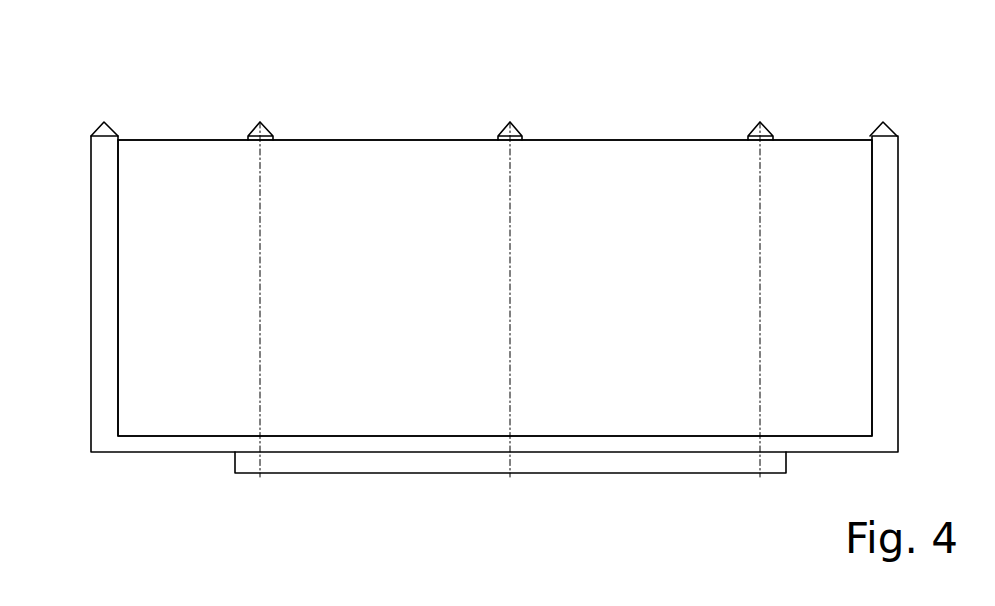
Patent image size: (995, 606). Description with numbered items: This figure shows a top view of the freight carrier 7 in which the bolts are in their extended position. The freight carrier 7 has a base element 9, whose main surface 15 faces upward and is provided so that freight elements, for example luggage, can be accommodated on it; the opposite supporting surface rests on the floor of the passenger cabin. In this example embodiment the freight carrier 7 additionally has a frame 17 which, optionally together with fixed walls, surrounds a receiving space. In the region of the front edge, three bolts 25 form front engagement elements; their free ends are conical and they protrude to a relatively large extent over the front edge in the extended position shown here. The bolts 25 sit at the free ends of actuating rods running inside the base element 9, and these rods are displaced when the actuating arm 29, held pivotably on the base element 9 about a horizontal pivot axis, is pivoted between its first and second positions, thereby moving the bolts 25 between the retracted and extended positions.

The freight carrier 7 is at (760, 493).
The base element 9 is at (666, 277).
The main surface 15 is at (495, 288).
The frame 17 is at (102, 337).
The bolts 25 is at (263, 127).
The actuating arm 29 is at (586, 475).